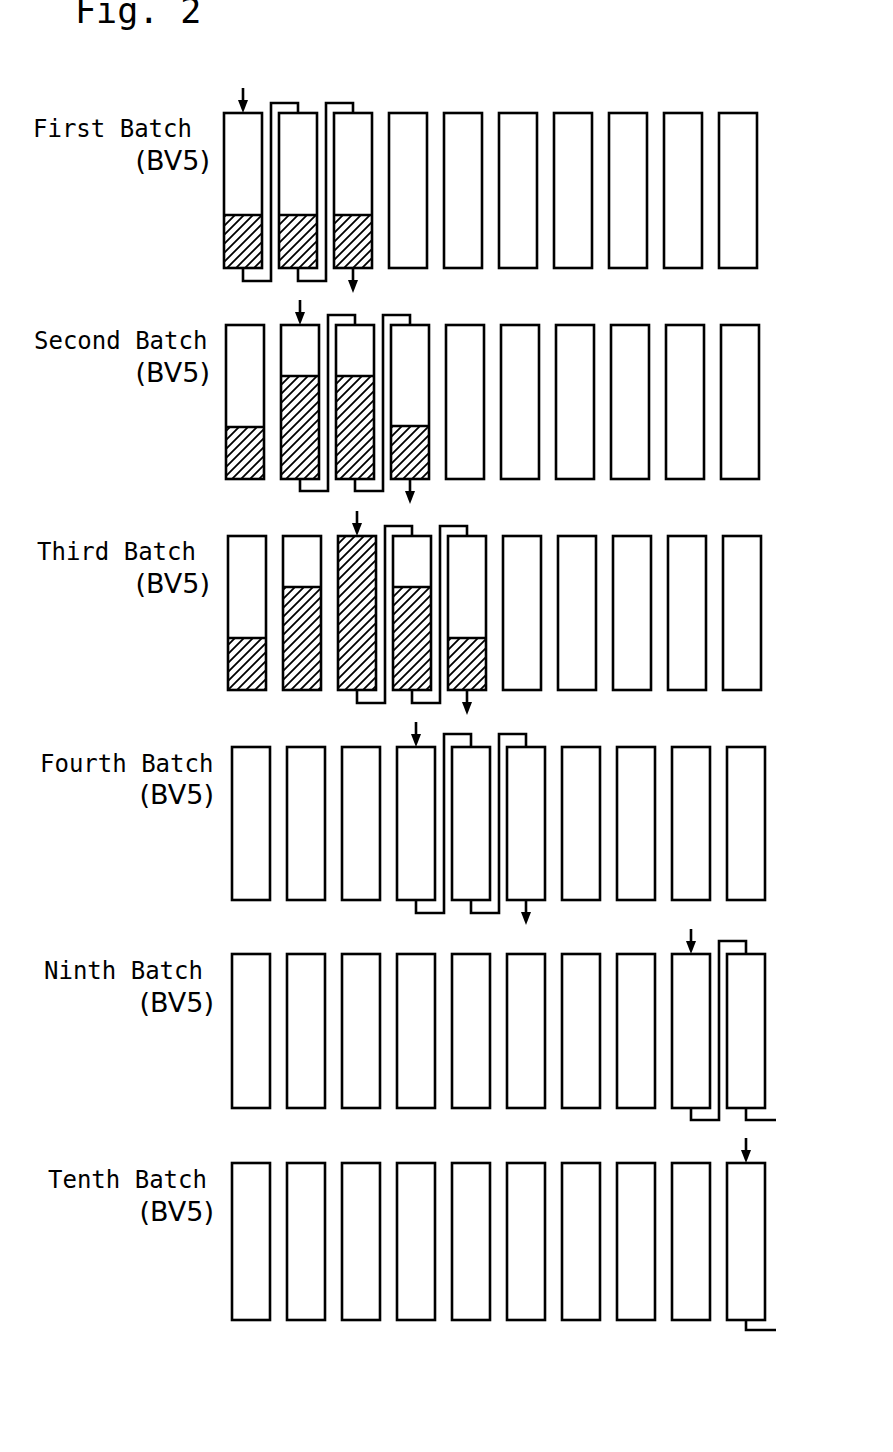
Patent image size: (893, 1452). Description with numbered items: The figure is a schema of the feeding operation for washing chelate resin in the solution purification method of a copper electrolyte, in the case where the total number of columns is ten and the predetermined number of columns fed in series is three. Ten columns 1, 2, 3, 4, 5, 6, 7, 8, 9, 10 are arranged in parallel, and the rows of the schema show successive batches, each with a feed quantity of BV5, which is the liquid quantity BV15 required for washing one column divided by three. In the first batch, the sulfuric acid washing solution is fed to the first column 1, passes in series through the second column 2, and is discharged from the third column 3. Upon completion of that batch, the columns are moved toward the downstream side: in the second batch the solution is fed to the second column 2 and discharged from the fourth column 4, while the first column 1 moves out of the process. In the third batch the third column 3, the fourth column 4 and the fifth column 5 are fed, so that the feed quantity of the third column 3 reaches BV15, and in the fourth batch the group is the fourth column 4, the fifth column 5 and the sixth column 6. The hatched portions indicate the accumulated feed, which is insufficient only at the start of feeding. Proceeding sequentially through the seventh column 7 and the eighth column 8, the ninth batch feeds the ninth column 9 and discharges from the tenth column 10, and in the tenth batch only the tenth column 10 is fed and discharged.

The first column 1 is at (247, 716).
The second column 2 is at (302, 716).
The third column 3 is at (357, 716).
The fourth column 4 is at (412, 716).
The fifth column 5 is at (467, 716).
The sixth column 6 is at (522, 716).
The seventh column 7 is at (577, 716).
The eighth column 8 is at (632, 716).
The ninth column 9 is at (687, 716).
The tenth column 10 is at (742, 716).